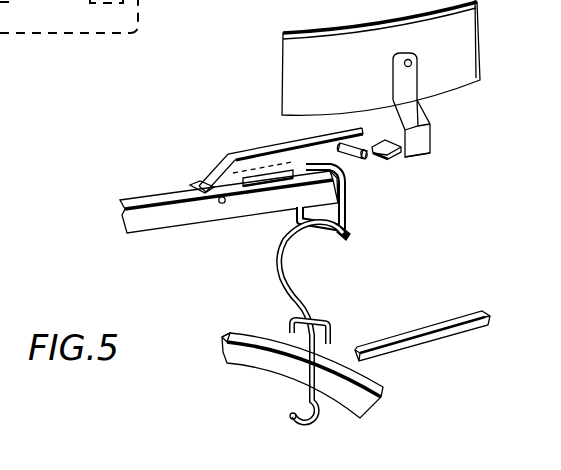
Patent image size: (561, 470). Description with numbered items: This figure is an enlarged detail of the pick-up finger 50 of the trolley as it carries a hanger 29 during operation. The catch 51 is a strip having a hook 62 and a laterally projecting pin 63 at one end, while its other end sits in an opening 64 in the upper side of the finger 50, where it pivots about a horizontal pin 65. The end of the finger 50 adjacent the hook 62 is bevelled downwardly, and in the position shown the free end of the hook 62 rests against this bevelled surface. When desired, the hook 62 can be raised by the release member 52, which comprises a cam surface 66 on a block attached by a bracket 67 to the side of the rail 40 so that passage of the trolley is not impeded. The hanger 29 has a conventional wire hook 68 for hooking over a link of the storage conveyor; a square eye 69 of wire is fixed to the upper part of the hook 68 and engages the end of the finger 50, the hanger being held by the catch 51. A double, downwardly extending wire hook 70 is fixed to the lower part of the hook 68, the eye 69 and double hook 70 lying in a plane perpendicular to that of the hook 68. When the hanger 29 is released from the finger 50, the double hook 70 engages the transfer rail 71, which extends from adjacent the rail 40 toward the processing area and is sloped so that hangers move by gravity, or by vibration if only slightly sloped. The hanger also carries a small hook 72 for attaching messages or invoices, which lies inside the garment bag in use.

The rail 40 is at (289, 65).
The release member 52 is at (405, 82).
The bracket 67 is at (425, 145).
The cam surface 66 is at (392, 155).
The hook 62 is at (343, 168).
The laterally projecting pin 63 is at (365, 160).
The catch 51 is at (257, 149).
The opening 64 is at (189, 184).
The pick-up finger 50 is at (180, 228).
The horizontal pin 65 is at (221, 204).
The square eye 69 is at (348, 212).
The wire hook 68 is at (278, 262).
The small hook 72 is at (290, 421).
The double wire hook 70 is at (330, 326).
The hanger 29 is at (223, 362).
The transfer rail 71 is at (438, 324).